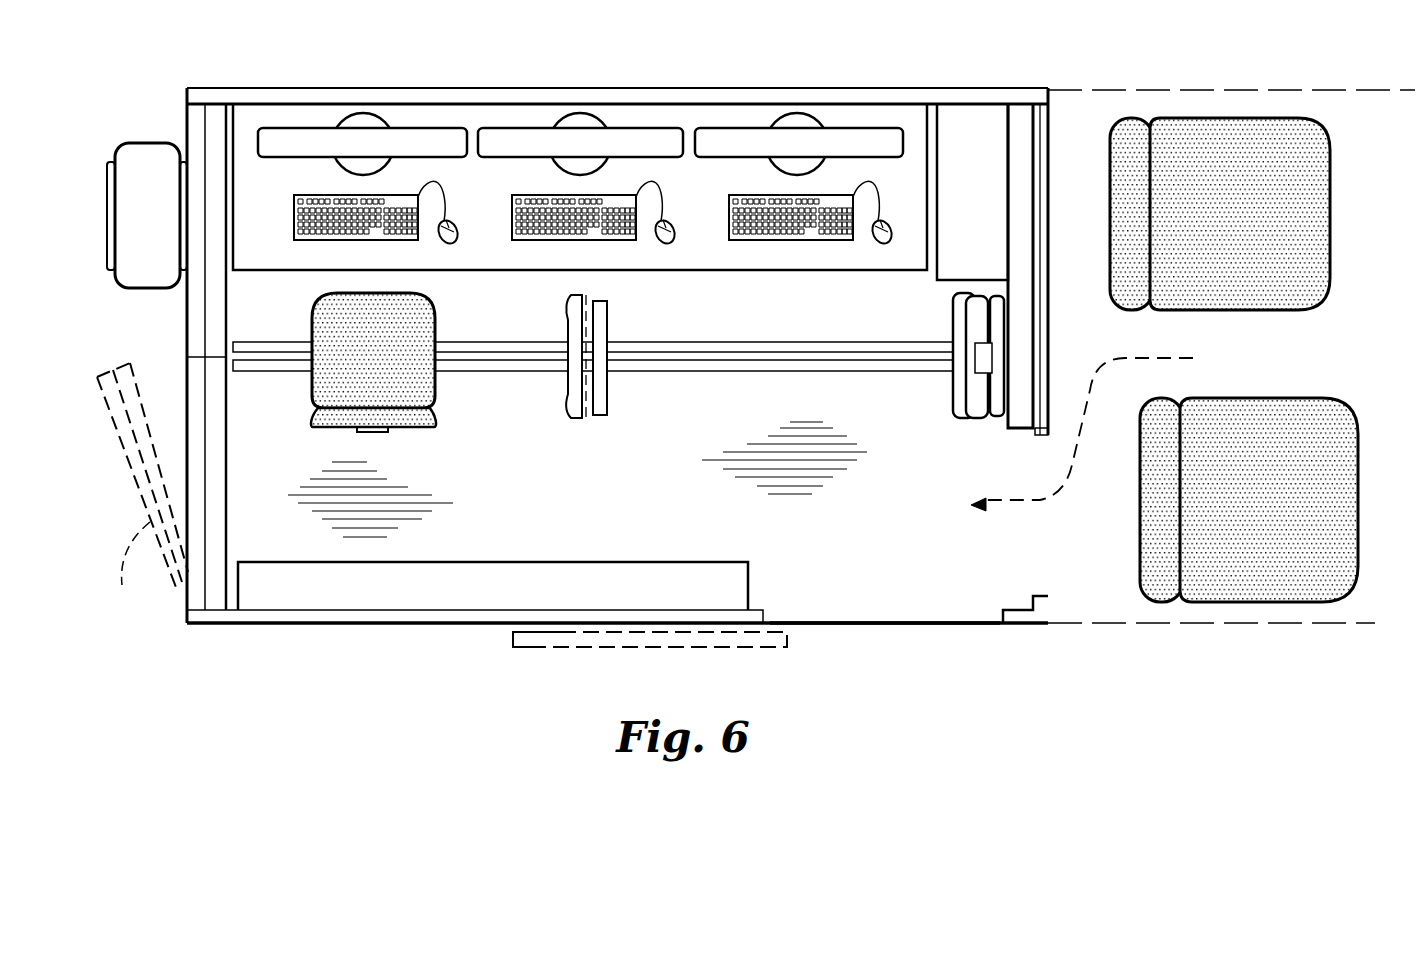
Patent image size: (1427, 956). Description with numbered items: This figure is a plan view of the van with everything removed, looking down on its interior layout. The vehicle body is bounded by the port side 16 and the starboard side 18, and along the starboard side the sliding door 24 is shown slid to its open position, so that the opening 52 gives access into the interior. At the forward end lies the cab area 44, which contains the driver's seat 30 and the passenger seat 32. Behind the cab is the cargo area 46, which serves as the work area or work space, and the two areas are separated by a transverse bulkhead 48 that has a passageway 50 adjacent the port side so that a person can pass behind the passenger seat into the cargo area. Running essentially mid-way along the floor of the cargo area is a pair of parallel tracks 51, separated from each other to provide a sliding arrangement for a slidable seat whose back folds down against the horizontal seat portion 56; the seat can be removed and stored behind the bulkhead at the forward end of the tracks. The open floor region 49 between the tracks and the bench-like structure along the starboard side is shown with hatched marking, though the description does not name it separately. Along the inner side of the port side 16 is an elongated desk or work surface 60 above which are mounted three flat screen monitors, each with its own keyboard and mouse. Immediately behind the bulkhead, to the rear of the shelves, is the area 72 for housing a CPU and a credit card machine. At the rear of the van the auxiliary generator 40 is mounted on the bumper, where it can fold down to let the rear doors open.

The port side 16 is at (150, 330).
The starboard side 18 is at (465, 625).
The starboard sliding door 24 is at (560, 649).
The driver's seat 30 is at (1308, 165).
The passenger seat 32 is at (1300, 432).
The auxiliary generator 40 is at (152, 170).
The cab area 44 is at (1198, 100).
The cargo area 46 is at (442, 535).
The bulkhead 48 is at (1042, 313).
The floor space 49 is at (488, 446).
The passageway 50 is at (1040, 432).
The parallel tracks 51 is at (775, 347).
The opening 52 is at (897, 610).
The horizontal seat portion 56 is at (341, 350).
The desk 60 is at (681, 203).
The area for housing a CPU and a credit card machine 72 is at (961, 206).